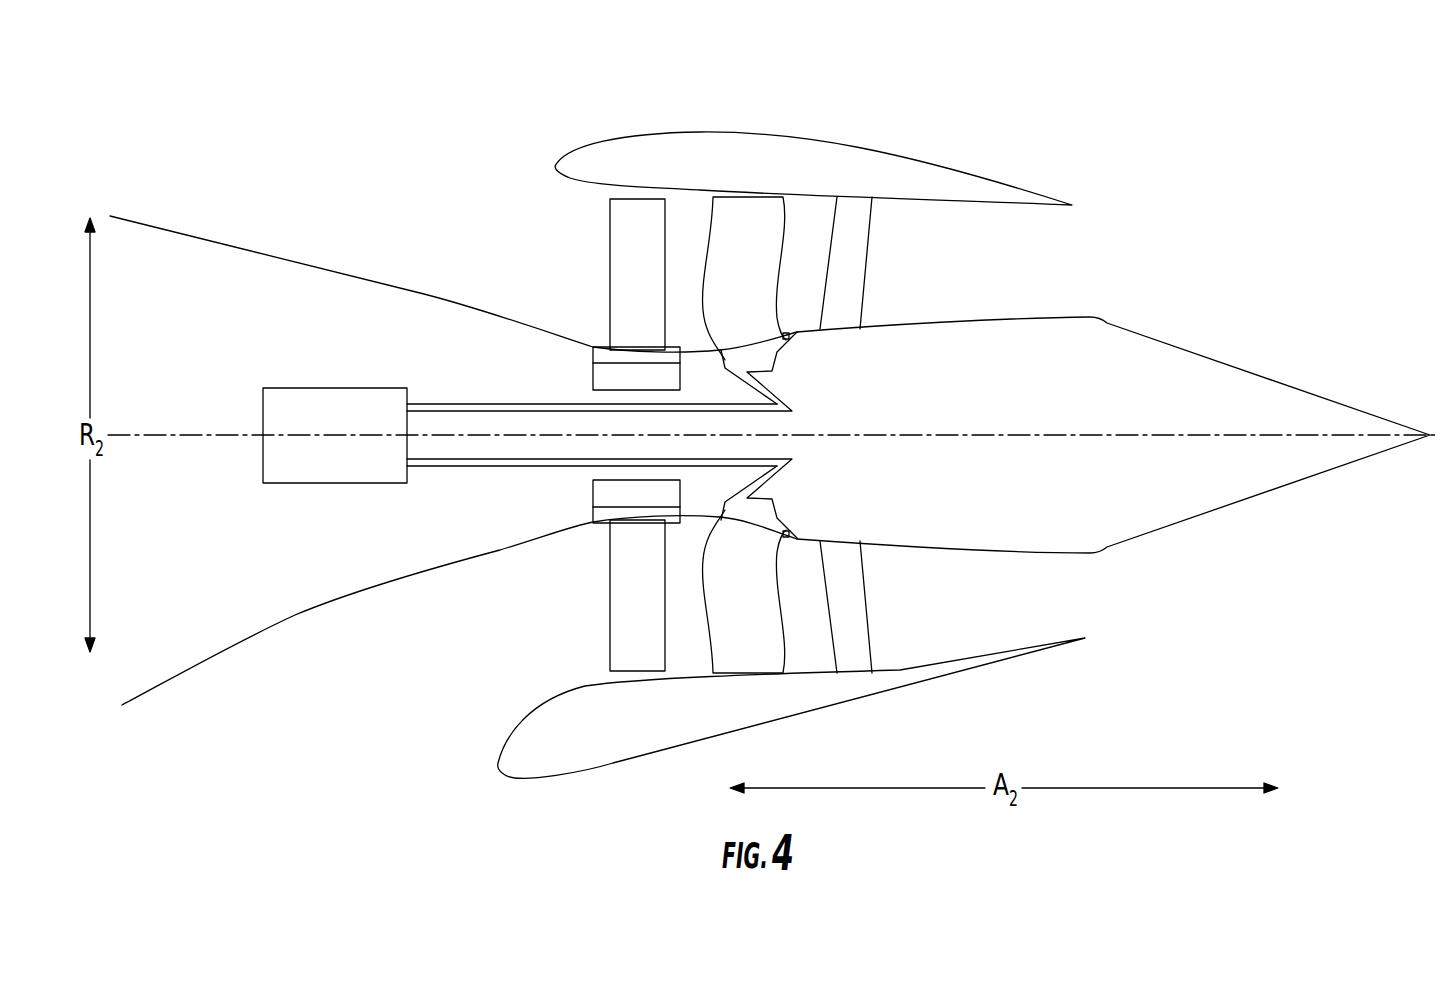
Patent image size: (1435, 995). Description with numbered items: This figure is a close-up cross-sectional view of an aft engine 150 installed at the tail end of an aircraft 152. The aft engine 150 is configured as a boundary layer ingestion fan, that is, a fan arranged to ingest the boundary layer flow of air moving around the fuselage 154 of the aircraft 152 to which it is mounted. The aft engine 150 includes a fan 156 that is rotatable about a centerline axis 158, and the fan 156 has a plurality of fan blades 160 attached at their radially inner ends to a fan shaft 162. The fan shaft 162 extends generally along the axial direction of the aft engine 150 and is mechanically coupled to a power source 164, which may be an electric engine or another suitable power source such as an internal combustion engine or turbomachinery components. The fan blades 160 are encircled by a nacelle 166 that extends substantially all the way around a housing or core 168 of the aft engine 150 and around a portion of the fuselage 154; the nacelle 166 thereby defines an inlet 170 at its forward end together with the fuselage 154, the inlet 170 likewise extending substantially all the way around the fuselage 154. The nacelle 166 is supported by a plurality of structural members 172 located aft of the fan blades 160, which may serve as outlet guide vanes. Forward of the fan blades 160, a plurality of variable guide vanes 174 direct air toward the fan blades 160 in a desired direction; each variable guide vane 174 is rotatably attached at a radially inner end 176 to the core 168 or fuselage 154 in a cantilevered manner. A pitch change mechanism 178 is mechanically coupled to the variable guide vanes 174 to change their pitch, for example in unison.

The aft engine 150 is at (1084, 122).
The aircraft 152 is at (438, 83).
The fuselage 154 is at (192, 236).
The fan 156 is at (756, 216).
The centerline axis 158 is at (1343, 435).
The fan blades 160 is at (773, 248).
The fan shaft 162 is at (755, 413).
The power source 164 is at (333, 388).
The nacelle 166 is at (793, 138).
The core 168 is at (927, 323).
The inlet 170 is at (466, 674).
The structural members 172 is at (857, 243).
The variable guide vanes 174 is at (623, 235).
The radially inner end 176 is at (619, 328).
The pitch change mechanism 178 is at (593, 380).